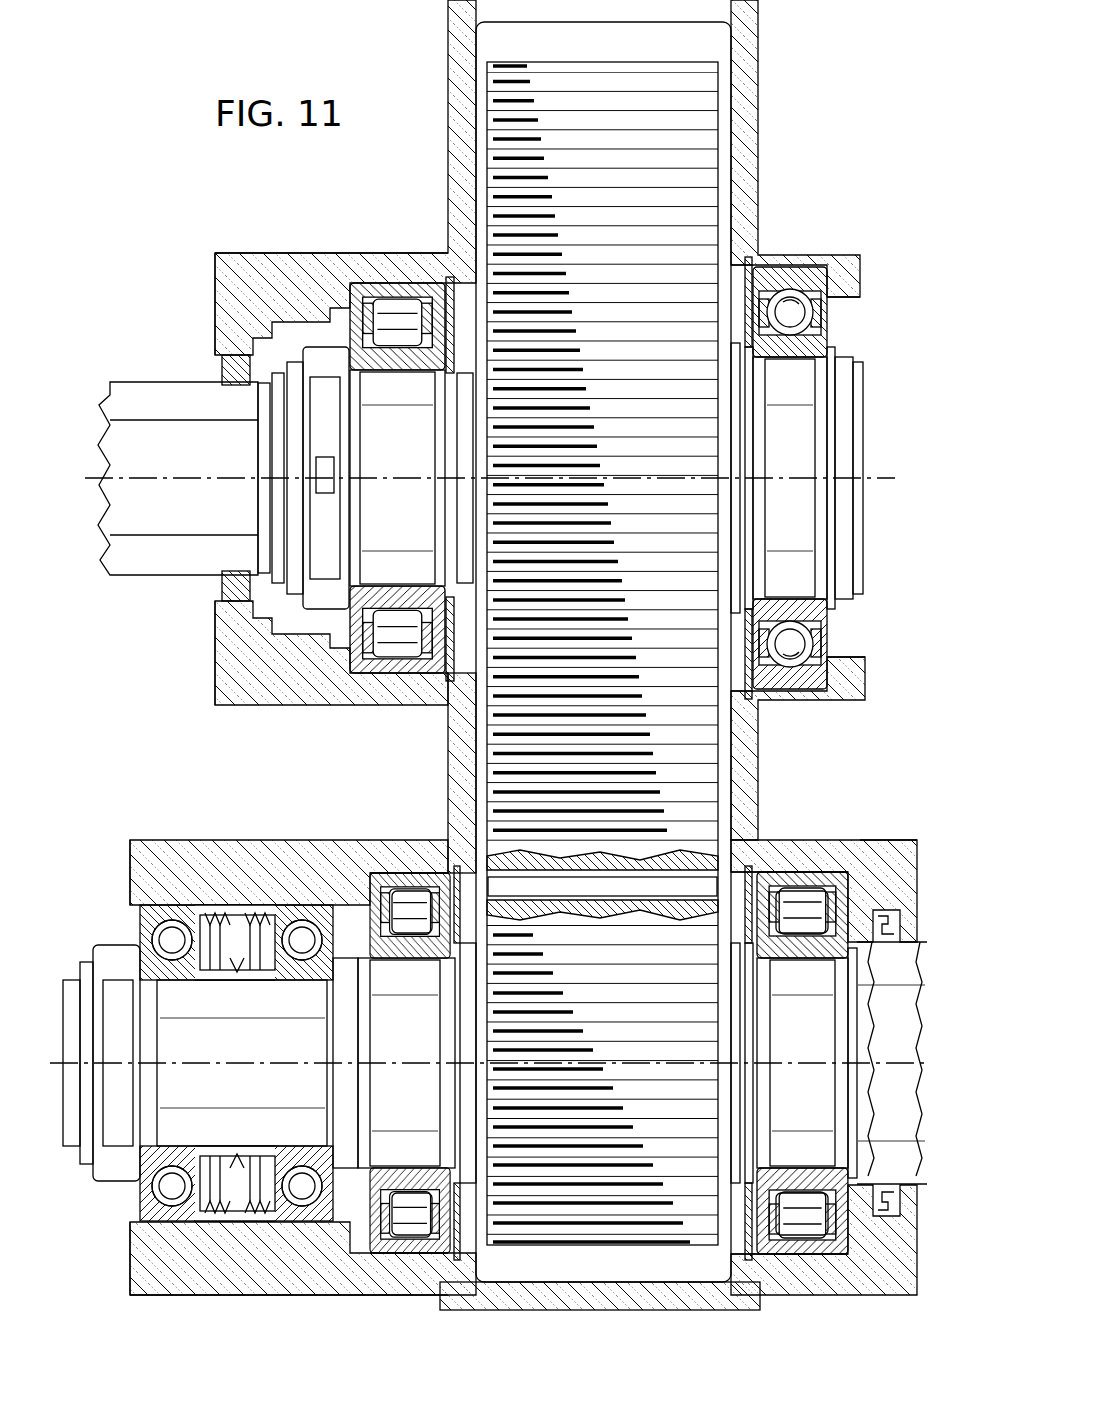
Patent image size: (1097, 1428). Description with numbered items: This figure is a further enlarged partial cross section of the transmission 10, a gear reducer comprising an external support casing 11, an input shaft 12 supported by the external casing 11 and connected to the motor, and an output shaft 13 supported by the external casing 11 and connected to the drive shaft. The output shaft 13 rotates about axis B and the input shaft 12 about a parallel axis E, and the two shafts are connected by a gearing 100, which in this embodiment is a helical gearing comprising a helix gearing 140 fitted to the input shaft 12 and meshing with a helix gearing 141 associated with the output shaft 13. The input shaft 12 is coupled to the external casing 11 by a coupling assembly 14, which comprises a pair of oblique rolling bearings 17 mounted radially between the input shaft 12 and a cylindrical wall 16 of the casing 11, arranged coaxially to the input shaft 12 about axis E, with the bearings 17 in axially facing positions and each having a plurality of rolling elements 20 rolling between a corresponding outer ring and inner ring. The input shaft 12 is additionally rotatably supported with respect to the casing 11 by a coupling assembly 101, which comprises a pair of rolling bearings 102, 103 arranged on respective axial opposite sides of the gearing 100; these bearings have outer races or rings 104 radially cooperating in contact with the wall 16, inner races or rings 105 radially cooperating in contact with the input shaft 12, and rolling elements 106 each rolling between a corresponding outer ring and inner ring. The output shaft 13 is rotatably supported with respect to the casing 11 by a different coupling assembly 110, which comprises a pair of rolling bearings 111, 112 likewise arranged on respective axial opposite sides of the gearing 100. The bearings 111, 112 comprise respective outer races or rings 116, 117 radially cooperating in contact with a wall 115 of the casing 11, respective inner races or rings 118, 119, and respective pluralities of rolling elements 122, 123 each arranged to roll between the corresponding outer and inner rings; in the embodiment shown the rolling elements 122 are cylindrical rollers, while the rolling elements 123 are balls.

The transmission 10 is at (90, 252).
The external support casing 11 is at (888, 680).
The input shaft 12 is at (900, 965).
The output shaft 13 is at (168, 378).
The coupling assembly 14 is at (218, 1235).
The cylindrical wall 16 is at (232, 662).
The oblique rolling bearings 17 is at (165, 895).
The rolling elements 20 is at (170, 940).
The gearing 100 is at (657, 678).
The coupling assembly 101 is at (615, 1255).
The rolling bearing 102 is at (395, 855).
The rolling bearing 103 is at (820, 850).
The outer races or rings 104 is at (395, 880).
The inner races or rings 105 is at (408, 1195).
The rolling elements 106 is at (408, 915).
The coupling assembly 110 is at (880, 312).
The rolling bearing 111 is at (378, 245).
The rolling bearing 112 is at (810, 240).
The wall 115 is at (300, 268).
The outer race or ring 116 is at (385, 283).
The outer race or ring 117 is at (812, 268).
The inner race or ring 118 is at (402, 365).
The inner race or ring 119 is at (800, 347).
The rolling elements 122 is at (385, 622).
The rolling elements 123 is at (790, 637).
The helix gearing 140 is at (555, 1198).
The helix gearing 141 is at (655, 95).